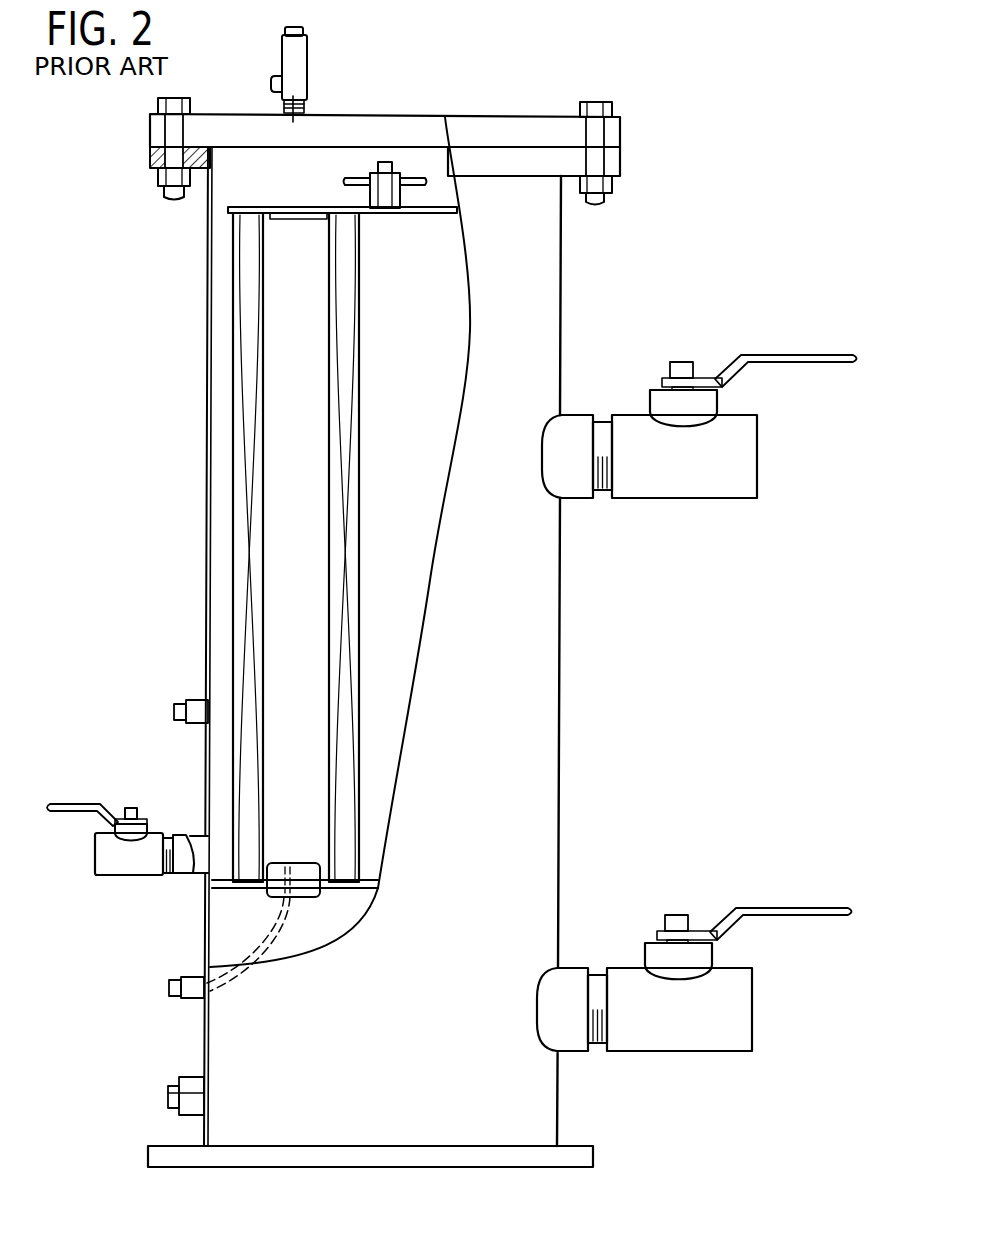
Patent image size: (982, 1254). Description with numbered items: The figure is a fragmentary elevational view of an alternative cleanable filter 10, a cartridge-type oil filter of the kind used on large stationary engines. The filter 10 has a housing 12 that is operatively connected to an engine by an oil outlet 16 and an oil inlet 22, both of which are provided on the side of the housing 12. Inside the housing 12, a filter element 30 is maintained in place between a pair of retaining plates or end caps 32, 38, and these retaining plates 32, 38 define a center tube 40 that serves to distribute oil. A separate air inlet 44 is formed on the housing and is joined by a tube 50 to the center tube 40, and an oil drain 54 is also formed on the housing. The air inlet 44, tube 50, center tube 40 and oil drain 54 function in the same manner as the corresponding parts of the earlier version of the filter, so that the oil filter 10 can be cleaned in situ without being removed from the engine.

The cleanable filter 10 is at (633, 115).
The housing 12 is at (538, 535).
The oil outlet 16 is at (727, 1000).
The oil inlet 22 is at (713, 440).
The filter element 30 is at (252, 298).
The retaining plate 32 is at (250, 890).
The retaining plate 38 is at (263, 217).
The center tube 40 is at (333, 438).
The air inlet 44 is at (187, 977).
The tube 50 is at (283, 925).
The oil drain 54 is at (188, 847).